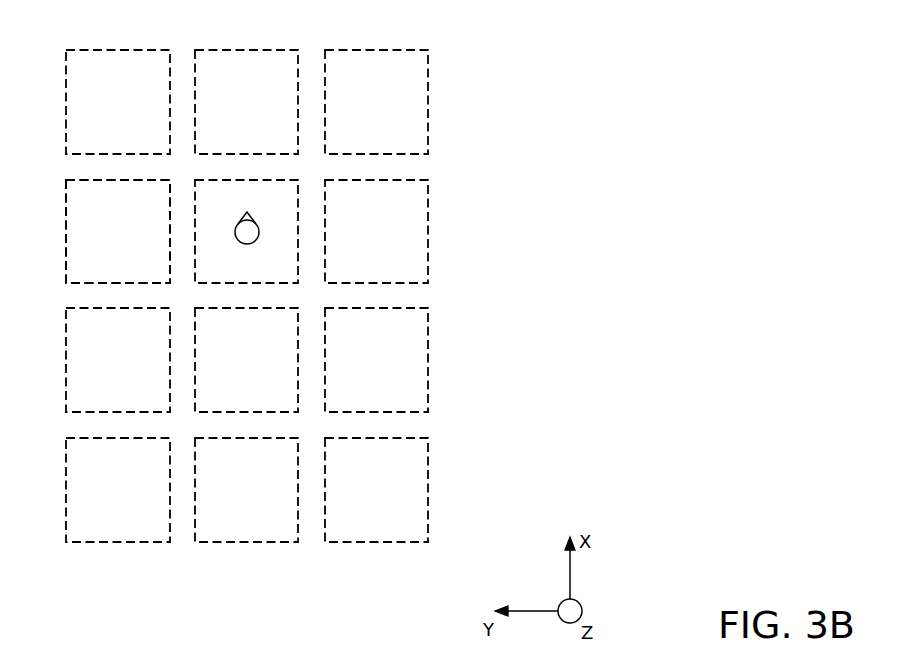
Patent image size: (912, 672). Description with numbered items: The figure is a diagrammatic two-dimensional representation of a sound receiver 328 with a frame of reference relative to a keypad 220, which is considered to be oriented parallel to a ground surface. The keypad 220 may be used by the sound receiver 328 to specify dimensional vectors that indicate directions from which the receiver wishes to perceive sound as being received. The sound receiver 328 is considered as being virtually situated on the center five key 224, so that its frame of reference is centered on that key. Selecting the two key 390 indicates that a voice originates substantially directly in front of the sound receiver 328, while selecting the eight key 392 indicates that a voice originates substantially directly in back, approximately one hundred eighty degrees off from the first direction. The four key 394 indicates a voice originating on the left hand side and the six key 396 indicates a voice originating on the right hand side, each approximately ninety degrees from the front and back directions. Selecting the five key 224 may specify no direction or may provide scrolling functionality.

The keypad 220 is at (299, 276).
The '5' key 224 is at (286, 284).
The sound receiver 328 is at (254, 220).
The '2' key 390 is at (246, 50).
The '8' key 392 is at (286, 412).
The '4' key 394 is at (105, 180).
The '6' key 396 is at (428, 226).